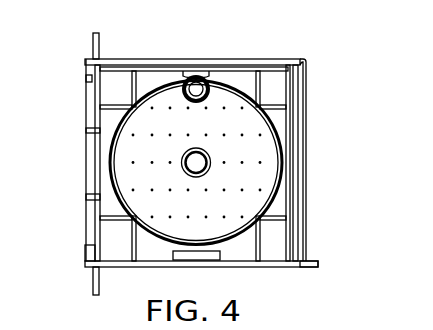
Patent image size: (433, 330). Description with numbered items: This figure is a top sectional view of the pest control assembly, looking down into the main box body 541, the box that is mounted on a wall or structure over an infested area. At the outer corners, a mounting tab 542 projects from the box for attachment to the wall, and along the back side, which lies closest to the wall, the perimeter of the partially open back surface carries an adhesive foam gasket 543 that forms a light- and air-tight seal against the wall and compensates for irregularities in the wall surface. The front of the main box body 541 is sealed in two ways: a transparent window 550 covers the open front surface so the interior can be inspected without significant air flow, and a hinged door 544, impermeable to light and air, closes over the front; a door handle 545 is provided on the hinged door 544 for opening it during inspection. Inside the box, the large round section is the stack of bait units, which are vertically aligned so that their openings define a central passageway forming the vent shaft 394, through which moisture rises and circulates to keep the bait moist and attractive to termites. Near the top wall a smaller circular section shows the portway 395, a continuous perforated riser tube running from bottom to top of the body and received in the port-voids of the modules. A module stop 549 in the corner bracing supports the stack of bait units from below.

The vent shaft 394 is at (182, 163).
The portway 395 is at (196, 78).
The main box body 541 is at (273, 265).
The mounting tab 542 is at (93, 38).
The adhesive foam gasket 543 is at (86, 76).
The hinged door 544 is at (304, 208).
The door handle 545 is at (309, 262).
The module stop 549 is at (263, 82).
The transparent window 550 is at (298, 92).